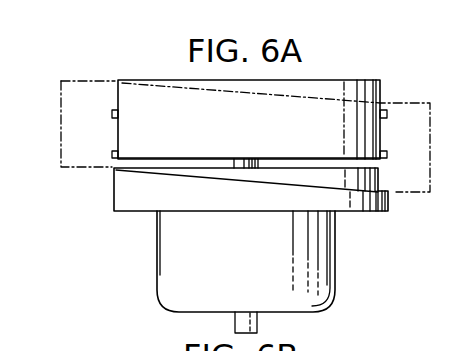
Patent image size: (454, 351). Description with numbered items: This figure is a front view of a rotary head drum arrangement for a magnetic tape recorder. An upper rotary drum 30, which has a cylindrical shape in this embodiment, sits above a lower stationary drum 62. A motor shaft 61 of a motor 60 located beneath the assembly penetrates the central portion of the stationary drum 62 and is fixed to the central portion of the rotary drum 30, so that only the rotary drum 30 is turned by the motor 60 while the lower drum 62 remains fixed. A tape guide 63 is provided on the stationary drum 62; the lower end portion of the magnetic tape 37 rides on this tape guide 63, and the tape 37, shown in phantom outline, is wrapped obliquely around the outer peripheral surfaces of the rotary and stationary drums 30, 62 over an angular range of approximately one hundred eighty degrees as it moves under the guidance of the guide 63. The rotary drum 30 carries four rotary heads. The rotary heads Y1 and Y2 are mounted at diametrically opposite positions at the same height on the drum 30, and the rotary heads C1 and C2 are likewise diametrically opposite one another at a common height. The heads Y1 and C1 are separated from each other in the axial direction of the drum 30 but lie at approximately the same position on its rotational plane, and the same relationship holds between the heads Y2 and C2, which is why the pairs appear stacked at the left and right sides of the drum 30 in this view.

The upper rotary drum 30 is at (165, 80).
The magnetic tape 37 is at (105, 83).
The rotary head C1 is at (112, 114).
The rotary head C2 is at (388, 114).
The rotary head Y1 is at (112, 154).
The rotary head Y2 is at (388, 155).
The motor 60 is at (160, 260).
The motor shaft 61 is at (243, 164).
The lower stationary drum 62 is at (118, 193).
The tape guide 63 is at (270, 181).